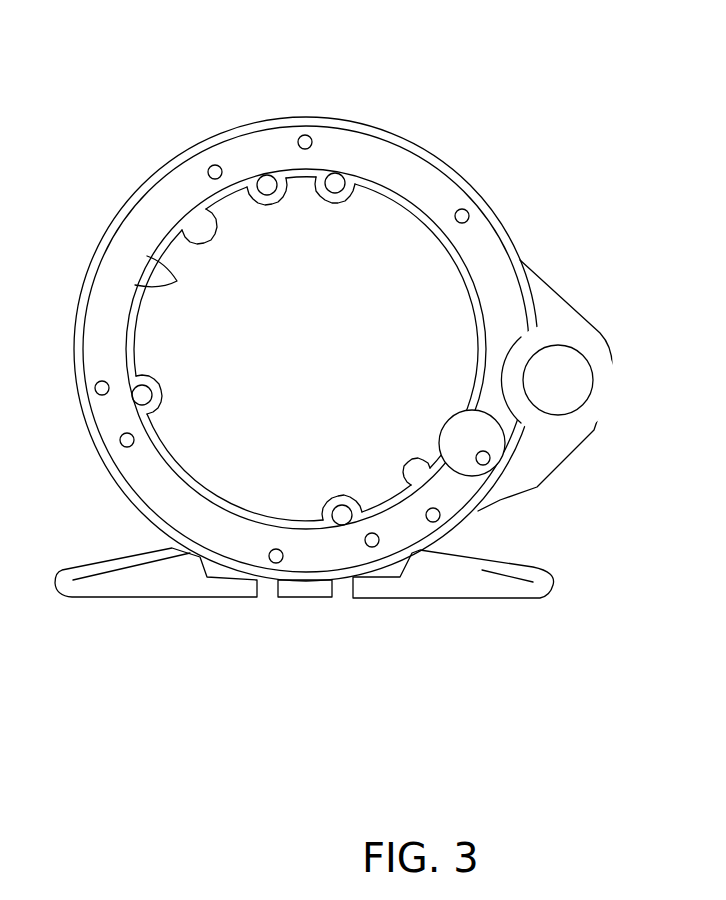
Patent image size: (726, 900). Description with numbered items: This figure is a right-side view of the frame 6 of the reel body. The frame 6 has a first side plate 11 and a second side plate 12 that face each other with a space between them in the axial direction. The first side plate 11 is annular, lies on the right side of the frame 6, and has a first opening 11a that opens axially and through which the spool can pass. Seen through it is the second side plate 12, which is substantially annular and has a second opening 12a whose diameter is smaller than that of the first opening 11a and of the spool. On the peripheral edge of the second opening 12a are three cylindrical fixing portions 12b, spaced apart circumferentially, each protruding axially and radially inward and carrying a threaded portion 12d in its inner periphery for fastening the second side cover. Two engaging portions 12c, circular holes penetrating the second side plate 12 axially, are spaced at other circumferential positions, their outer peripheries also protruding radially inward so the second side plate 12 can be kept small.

The frame 6 is at (315, 333).
The first side plate 11 is at (488, 207).
The first opening 11a is at (135, 285).
The second side plate 12 is at (560, 297).
The second opening 12a is at (185, 228).
The fixing portion 12b is at (158, 382).
The engaging portion 12c is at (266, 183).
The threaded portion 12d is at (338, 178).